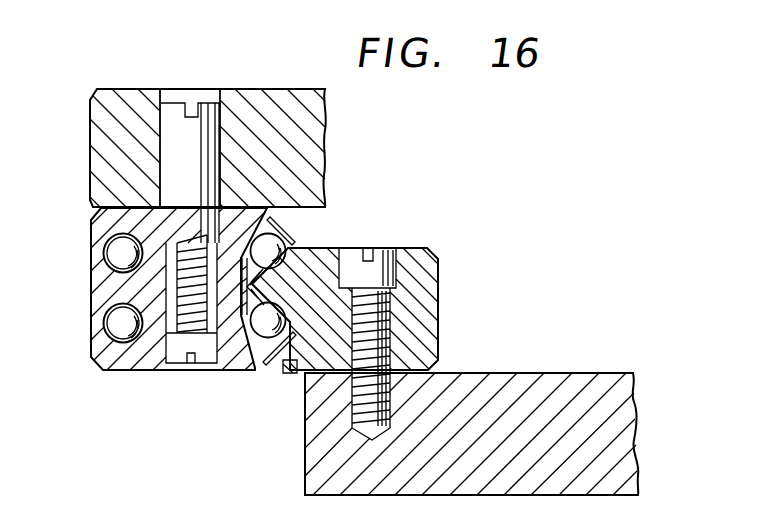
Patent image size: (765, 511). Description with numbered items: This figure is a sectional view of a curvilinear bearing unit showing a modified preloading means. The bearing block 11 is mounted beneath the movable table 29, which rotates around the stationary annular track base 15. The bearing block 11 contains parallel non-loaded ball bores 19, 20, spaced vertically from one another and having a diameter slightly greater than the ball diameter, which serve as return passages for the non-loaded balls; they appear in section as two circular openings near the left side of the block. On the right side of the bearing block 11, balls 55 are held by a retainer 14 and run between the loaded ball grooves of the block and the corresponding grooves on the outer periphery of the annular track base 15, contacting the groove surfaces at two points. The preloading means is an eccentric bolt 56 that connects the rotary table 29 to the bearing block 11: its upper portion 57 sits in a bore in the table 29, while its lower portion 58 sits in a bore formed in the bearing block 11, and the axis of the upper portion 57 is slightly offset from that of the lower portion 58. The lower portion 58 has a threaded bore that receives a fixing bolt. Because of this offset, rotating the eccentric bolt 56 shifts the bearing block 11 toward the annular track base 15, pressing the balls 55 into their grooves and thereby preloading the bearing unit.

The bearing block 11 is at (128, 357).
The retainer 14 is at (297, 373).
The annular track base 15 is at (428, 279).
The non-loaded ball bore 19 is at (106, 257).
The non-loaded ball bore 20 is at (106, 324).
The movable table 29 is at (123, 103).
The ball 55 is at (272, 244).
The eccentric bolt 56 is at (178, 104).
The upper portion 57 is at (198, 168).
The lower portion 58 is at (178, 222).